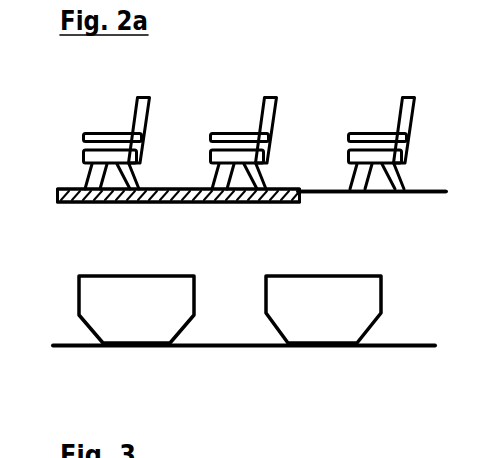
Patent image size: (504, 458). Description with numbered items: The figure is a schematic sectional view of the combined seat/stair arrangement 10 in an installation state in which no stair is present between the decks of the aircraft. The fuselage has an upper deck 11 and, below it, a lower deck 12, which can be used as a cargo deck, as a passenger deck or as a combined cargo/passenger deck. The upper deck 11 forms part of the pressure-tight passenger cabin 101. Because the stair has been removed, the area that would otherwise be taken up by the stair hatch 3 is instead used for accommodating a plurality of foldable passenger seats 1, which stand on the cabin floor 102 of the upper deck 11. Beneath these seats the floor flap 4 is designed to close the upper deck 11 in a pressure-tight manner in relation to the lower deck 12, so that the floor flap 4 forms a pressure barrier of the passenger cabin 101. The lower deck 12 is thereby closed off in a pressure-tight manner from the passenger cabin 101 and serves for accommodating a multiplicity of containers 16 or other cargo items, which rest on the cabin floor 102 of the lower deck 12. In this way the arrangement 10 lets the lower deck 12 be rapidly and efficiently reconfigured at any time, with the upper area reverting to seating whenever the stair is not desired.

The combined seat/stair arrangement 10 is at (63, 87).
The passenger cabin 101 is at (212, 104).
The foldable passenger seat 1 is at (412, 94).
The stair hatch 3 is at (189, 184).
The floor flap 4 is at (73, 204).
The upper deck 11 is at (310, 161).
The lower deck 12 is at (235, 258).
The container 16 is at (333, 275).
The cabin floor 102 is at (380, 196).